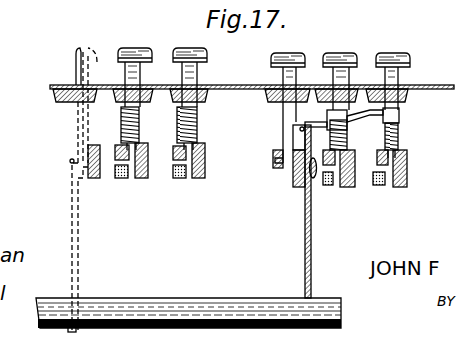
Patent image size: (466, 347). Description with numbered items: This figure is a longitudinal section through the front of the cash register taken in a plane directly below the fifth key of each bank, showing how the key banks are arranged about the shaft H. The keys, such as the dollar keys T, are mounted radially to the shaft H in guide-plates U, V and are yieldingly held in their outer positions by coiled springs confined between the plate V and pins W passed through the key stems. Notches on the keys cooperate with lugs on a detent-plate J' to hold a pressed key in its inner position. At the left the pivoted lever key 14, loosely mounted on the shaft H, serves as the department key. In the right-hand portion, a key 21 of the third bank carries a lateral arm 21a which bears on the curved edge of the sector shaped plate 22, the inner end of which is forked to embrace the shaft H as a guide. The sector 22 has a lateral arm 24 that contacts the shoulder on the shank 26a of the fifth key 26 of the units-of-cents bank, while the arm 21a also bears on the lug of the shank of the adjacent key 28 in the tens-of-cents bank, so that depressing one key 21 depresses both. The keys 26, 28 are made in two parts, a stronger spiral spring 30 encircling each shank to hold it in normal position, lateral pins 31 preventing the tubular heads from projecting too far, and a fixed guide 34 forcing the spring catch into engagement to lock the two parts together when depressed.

The lever key 14 is at (92, 39).
The dollar keys T is at (180, 48).
The pins W is at (141, 106).
The guide-plate U is at (202, 104).
The guide-plate V is at (147, 156).
The detent-plate J' is at (140, 185).
The keys of the third bank 21 is at (283, 76).
The lateral arm 21a is at (305, 115).
The sector shaped plate 22 is at (302, 210).
The keys of the tens-of-cents bank 28 is at (347, 81).
The fifth key of the units-of-cents bank 26 is at (400, 81).
The shank 26a is at (341, 187).
The lateral pins 31 is at (398, 113).
The lateral arm 24 is at (388, 124).
The spiral spring 30 is at (399, 143).
The fixed guide 34 is at (407, 168).
The shaft H is at (177, 289).